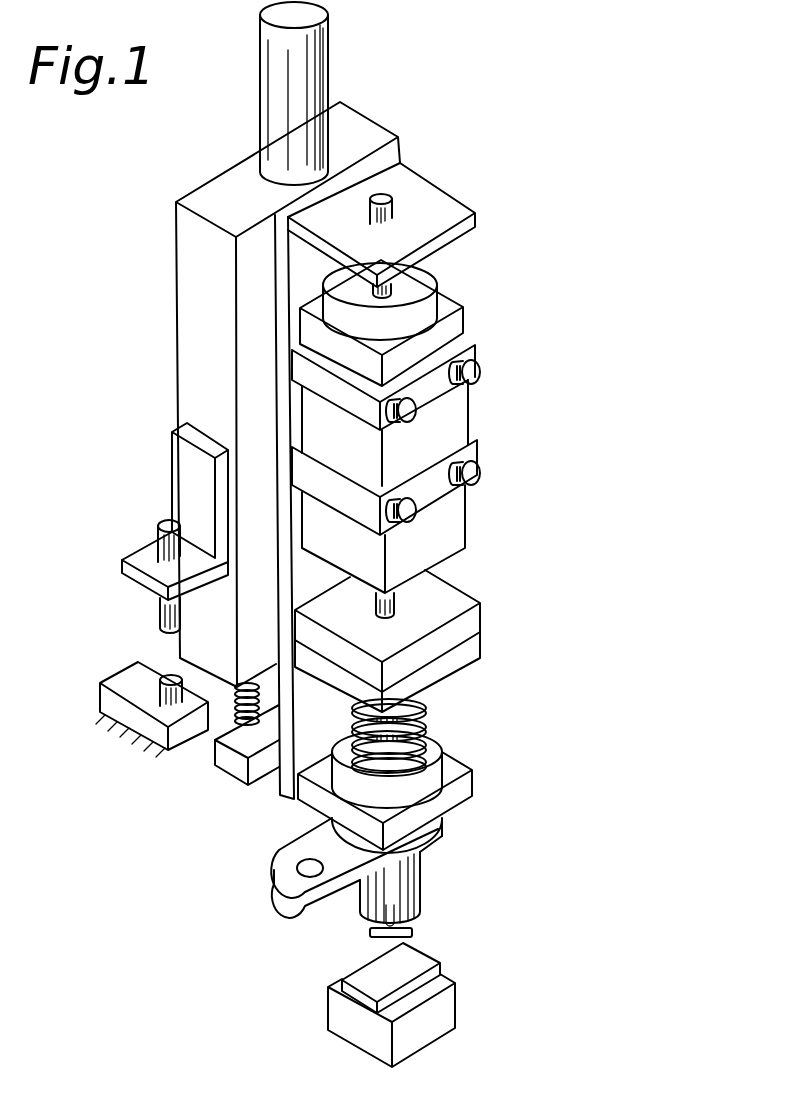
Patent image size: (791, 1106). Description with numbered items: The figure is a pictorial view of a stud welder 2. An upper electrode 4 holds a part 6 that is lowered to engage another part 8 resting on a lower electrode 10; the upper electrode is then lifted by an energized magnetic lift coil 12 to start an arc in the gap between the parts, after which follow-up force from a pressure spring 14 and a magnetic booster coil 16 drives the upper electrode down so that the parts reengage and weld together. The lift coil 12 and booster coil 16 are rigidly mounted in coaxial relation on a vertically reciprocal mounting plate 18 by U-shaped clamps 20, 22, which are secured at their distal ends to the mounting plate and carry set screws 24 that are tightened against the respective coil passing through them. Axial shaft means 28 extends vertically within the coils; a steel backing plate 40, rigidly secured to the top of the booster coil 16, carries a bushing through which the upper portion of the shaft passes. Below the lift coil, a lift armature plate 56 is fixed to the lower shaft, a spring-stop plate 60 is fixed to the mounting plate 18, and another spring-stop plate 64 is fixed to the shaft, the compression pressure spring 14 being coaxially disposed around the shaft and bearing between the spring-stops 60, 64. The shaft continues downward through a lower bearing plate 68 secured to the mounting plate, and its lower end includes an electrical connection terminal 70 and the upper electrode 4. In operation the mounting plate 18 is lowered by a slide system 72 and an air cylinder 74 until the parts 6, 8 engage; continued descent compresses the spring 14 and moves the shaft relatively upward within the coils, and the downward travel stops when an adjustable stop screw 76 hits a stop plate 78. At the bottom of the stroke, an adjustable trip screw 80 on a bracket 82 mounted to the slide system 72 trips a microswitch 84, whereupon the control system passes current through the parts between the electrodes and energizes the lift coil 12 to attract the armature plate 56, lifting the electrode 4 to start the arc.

The stud welder 2 is at (222, 117).
The upper electrode 4 is at (412, 895).
The part 6 is at (412, 933).
The part 8 is at (375, 963).
The lower electrode 10 is at (340, 1010).
The magnetic coil 12 is at (455, 523).
The pressure spring 14 is at (425, 718).
The magnetic booster coil 16 is at (455, 330).
The mounting plate 18 is at (307, 740).
The U-shaped clamp 20 is at (472, 453).
The U-shaped clamp 22 is at (473, 353).
The set screw 24 is at (480, 377).
The axial shaft means 28 is at (392, 201).
The steel backing plate 40 is at (425, 285).
The lift armature plate 56 is at (453, 597).
The spring-stop plate 60 is at (473, 650).
The spring-stop plate 64 is at (437, 752).
The lower bearing plate 68 is at (463, 792).
The electrical connection terminal 70 is at (440, 847).
The slide system 72 is at (222, 188).
The air cylinder 74 is at (276, 60).
The adjustable stop screw 76 is at (228, 690).
The stop plate 78 is at (245, 742).
The adjustable trip screw 80 is at (162, 538).
The bracket 82 is at (152, 570).
The microswitch 84 is at (128, 673).